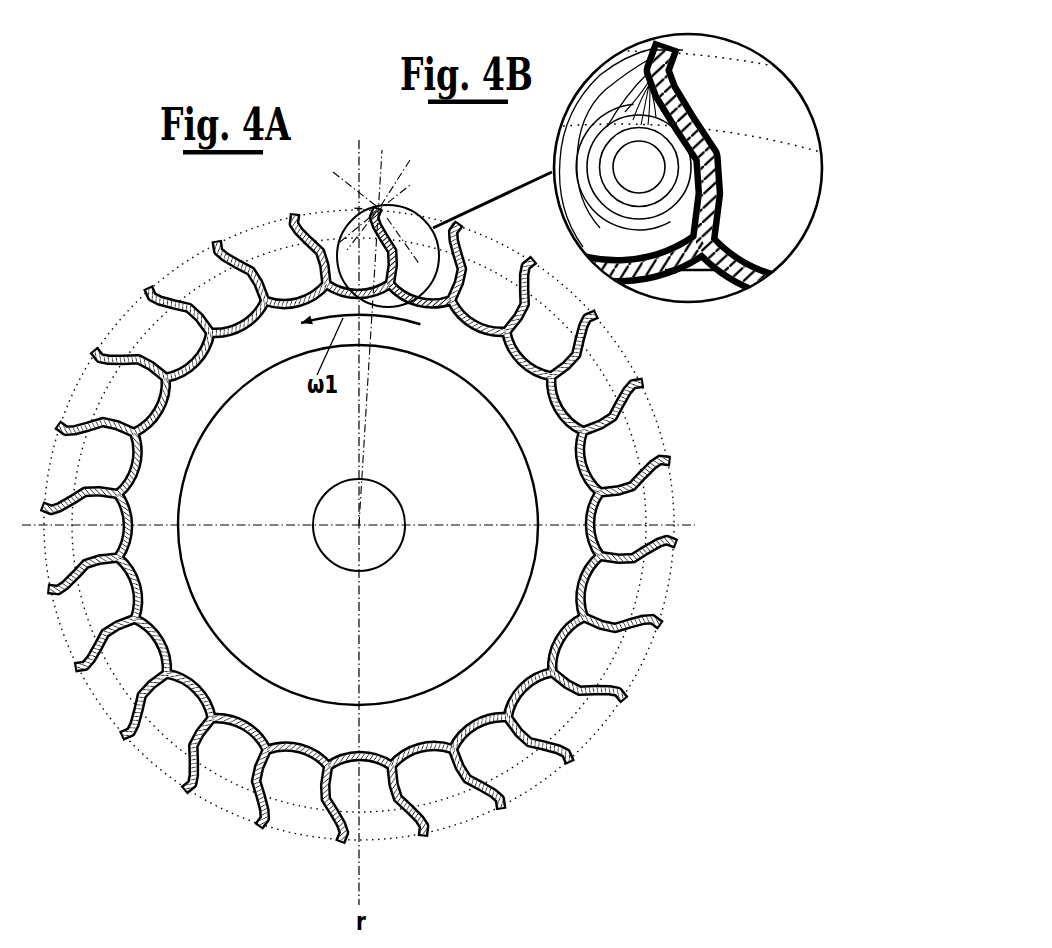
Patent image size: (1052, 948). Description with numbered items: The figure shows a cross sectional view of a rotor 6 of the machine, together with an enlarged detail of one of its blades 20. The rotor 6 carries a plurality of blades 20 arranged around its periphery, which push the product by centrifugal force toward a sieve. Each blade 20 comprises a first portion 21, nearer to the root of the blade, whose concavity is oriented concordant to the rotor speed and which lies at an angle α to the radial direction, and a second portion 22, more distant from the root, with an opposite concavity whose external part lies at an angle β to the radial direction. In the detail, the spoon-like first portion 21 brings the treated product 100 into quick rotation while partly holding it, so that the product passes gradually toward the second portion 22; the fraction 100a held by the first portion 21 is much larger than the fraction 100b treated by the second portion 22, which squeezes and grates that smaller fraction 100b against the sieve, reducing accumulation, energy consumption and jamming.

In FIG. 4A, the rotor 6 is at (140, 238).
In FIG. 4A, the blade 20 is at (583, 307).
In FIG. 4B, the blade 20 is at (772, 102).
In FIG. 4A, the first portion 21 is at (397, 240).
In FIG. 4B, the first portion 21 is at (717, 147).
In FIG. 4A, the second portion 22 is at (380, 207).
In FIG. 4B, the second portion 22 is at (667, 82).
In FIG. 4B, the treated product 100 is at (566, 156).
In FIG. 4B, the fraction of treated product held by first portion 100a is at (610, 123).
In FIG. 4B, the fraction of treated product treated by second portion 100b is at (647, 78).